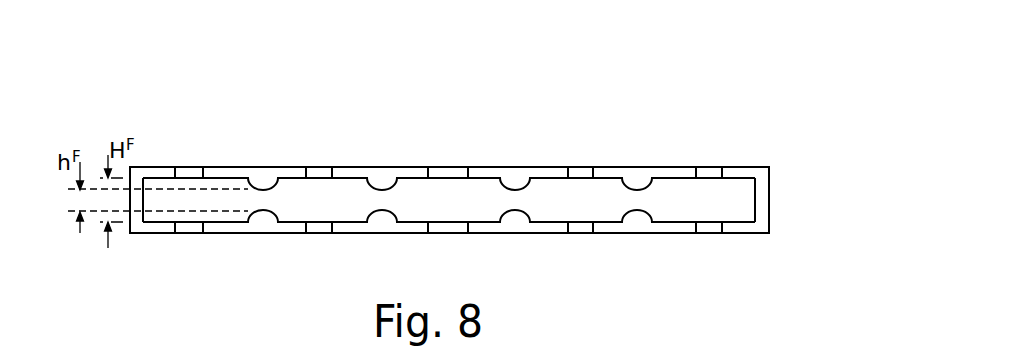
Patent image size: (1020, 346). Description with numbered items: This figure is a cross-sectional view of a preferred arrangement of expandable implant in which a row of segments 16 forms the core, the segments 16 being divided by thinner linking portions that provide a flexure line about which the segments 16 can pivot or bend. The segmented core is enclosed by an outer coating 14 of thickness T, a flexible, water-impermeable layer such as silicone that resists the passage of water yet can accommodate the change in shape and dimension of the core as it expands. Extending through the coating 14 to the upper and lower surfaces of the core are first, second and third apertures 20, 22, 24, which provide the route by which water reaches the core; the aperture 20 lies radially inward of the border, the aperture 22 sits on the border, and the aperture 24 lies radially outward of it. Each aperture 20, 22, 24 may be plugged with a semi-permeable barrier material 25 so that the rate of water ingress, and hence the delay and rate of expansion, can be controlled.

The outer coating 14 is at (760, 176).
The segments 16 is at (193, 197).
The first aperture 20 is at (443, 171).
The second aperture 22 is at (312, 171).
The third aperture 24 is at (188, 171).
The semi-permeable barrier material 25 is at (322, 171).